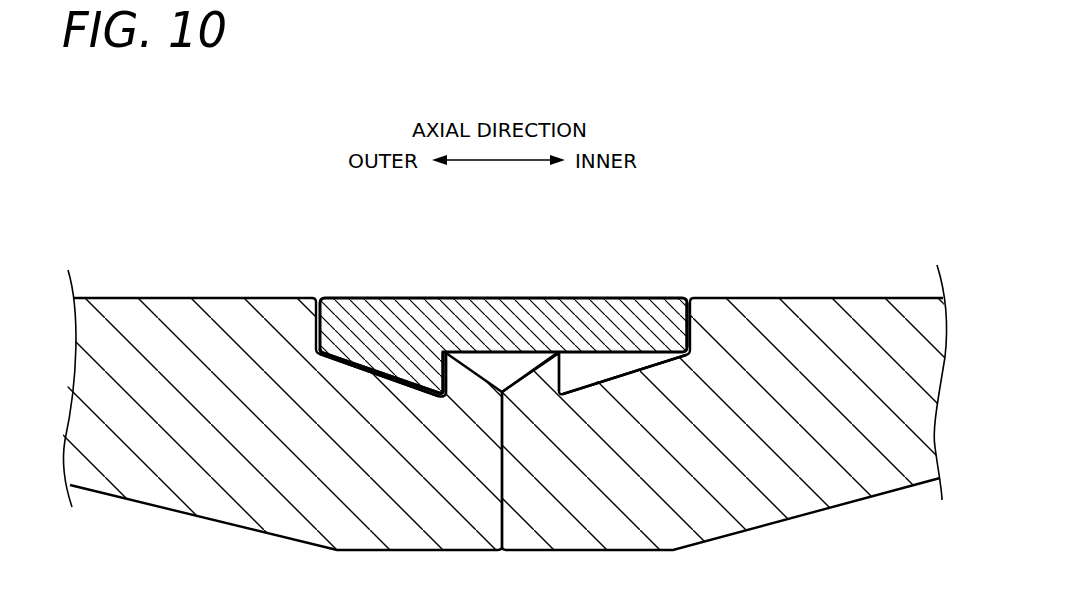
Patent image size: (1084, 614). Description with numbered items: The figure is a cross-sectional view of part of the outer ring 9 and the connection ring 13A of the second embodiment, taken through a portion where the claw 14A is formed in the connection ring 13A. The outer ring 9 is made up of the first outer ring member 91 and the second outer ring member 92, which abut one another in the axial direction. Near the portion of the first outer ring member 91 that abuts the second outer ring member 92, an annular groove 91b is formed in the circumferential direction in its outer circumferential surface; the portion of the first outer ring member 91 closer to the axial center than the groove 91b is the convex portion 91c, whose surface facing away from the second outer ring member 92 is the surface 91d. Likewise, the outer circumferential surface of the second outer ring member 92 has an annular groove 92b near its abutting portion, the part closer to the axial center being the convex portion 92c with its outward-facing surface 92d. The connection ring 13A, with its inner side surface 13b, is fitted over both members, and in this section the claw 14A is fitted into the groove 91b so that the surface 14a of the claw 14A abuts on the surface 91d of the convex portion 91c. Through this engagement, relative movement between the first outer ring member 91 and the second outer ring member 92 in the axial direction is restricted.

The outer ring 9 is at (880, 178).
The connection ring 13A is at (526, 303).
The inner side surface of seal member 13b is at (695, 330).
The claw 14A is at (403, 360).
The surface of the claw 14a is at (449, 384).
The first outer ring member 91 is at (167, 493).
The groove 91b is at (356, 363).
The convex portion 91c is at (457, 350).
The surface 91d is at (437, 357).
The second outer ring member 92 is at (832, 493).
The groove 92b is at (617, 370).
The convex portion 92c is at (552, 370).
The surface 92d is at (564, 370).